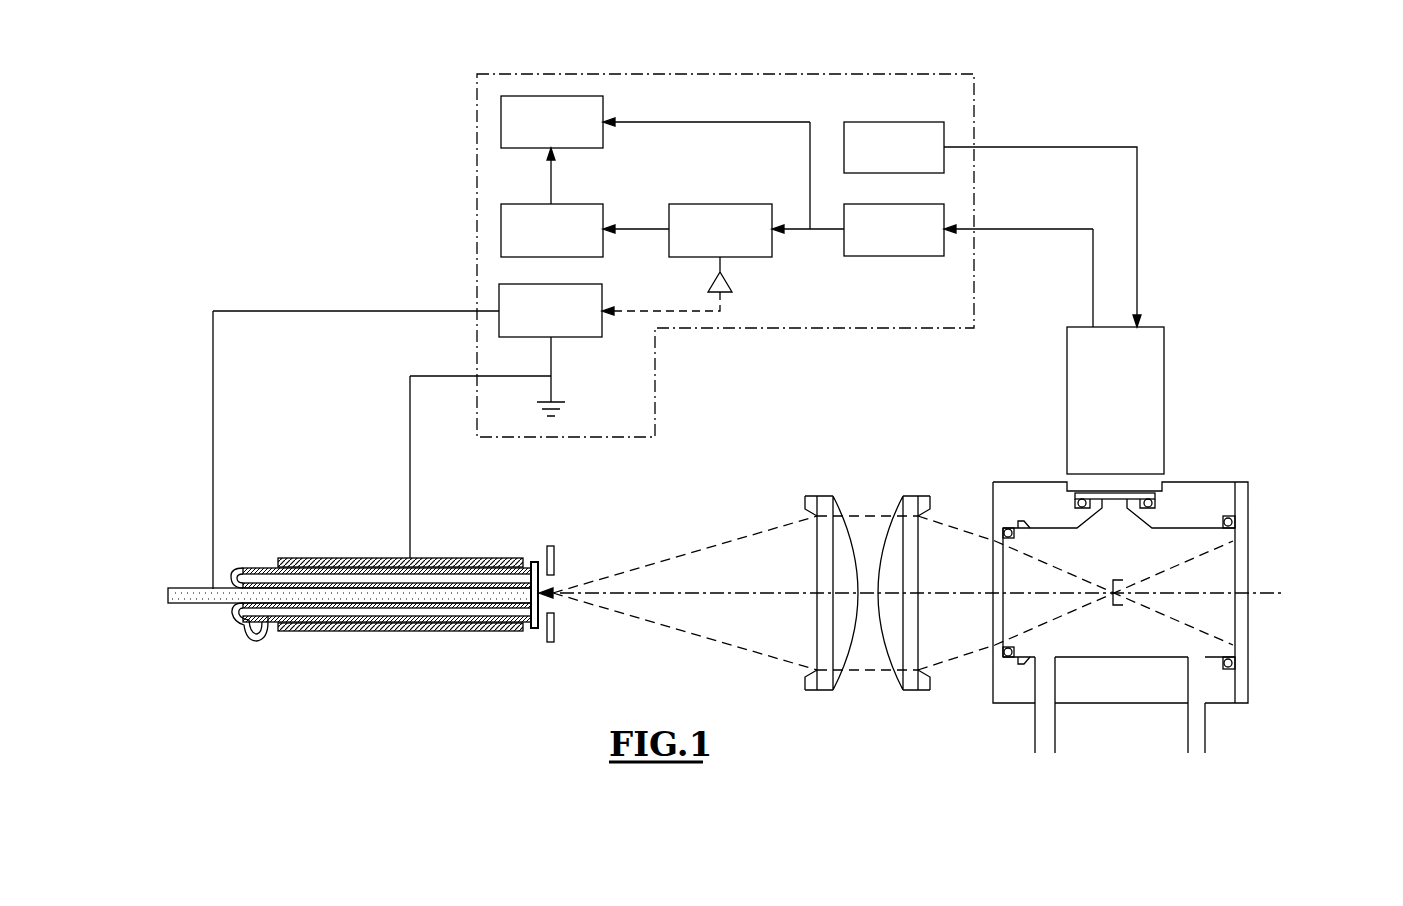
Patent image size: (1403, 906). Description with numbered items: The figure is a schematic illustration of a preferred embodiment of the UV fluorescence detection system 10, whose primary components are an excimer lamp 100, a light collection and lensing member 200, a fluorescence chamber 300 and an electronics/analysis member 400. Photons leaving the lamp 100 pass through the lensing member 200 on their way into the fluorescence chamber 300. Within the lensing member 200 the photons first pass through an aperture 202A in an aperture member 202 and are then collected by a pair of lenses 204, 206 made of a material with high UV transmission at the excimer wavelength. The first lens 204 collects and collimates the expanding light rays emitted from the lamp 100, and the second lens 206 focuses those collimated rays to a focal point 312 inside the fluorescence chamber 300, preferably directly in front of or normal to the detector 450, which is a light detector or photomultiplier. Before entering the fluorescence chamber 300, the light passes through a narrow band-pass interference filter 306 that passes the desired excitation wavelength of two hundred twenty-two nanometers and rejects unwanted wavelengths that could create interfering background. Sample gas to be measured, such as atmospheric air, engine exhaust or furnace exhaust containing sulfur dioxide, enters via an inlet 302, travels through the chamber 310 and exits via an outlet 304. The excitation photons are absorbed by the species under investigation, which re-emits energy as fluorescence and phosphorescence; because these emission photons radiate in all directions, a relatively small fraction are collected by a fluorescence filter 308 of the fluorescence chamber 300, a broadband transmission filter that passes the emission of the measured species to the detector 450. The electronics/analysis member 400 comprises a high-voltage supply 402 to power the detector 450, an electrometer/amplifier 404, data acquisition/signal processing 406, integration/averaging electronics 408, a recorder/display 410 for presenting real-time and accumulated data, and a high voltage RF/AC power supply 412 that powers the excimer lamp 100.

The UV fluorescence detection system 10 is at (1178, 201).
The excimer lamp 100 is at (335, 648).
The light collection and lensing member 200 is at (776, 699).
The aperture member 202 is at (562, 548).
The aperture 202A is at (560, 586).
The first lens 204 is at (834, 494).
The second lens 206 is at (906, 494).
The fluorescence chamber 300 is at (1230, 467).
The inlet 302 is at (1060, 748).
The outlet 304 is at (1210, 745).
The narrow band-pass interference filter 306 is at (992, 652).
The fluorescence filter 308 is at (1160, 486).
The chamber 310 is at (1140, 635).
The focal point 312 is at (1123, 580).
The electronics/analysis member 400 is at (980, 97).
The high-voltage supply 402 is at (910, 160).
The electrometer/amplifier 404 is at (848, 222).
The data acquisition/signal processing 406 is at (687, 259).
The integration/averaging electronics 408 is at (568, 243).
The recorder/display 410 is at (568, 135).
The high voltage RF/AC power supply 412 is at (566, 323).
The detector 450 is at (1132, 413).